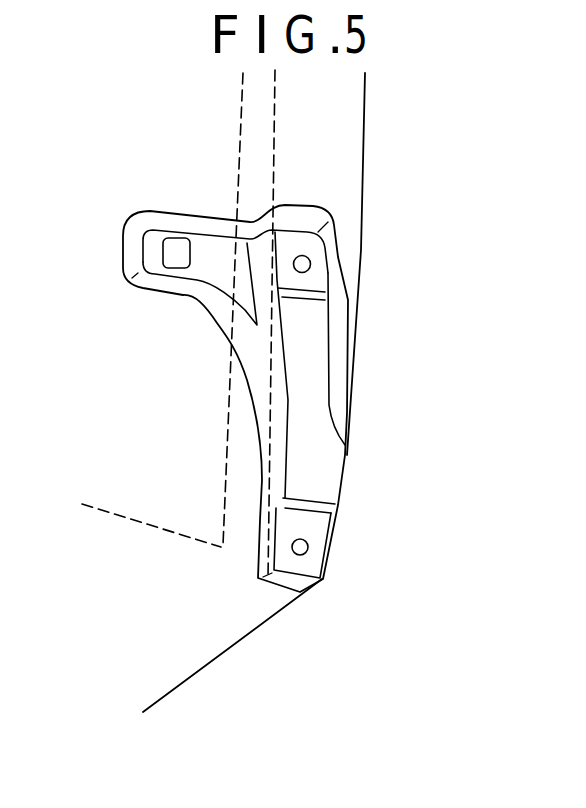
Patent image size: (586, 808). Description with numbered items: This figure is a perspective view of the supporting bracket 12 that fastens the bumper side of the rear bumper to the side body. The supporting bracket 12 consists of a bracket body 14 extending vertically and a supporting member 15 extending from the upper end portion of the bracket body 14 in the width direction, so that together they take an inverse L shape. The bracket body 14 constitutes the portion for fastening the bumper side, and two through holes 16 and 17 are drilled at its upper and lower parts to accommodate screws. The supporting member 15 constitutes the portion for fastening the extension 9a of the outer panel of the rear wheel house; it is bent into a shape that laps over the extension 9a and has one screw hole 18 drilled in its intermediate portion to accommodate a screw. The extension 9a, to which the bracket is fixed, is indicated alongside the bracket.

The extension 9a is at (342, 153).
The supporting bracket 12 is at (222, 332).
The bracket body 14 is at (317, 368).
The supporting member 15 is at (211, 257).
The through hole 16 is at (311, 262).
The through hole 17 is at (309, 547).
The screw hole 18 is at (168, 251).